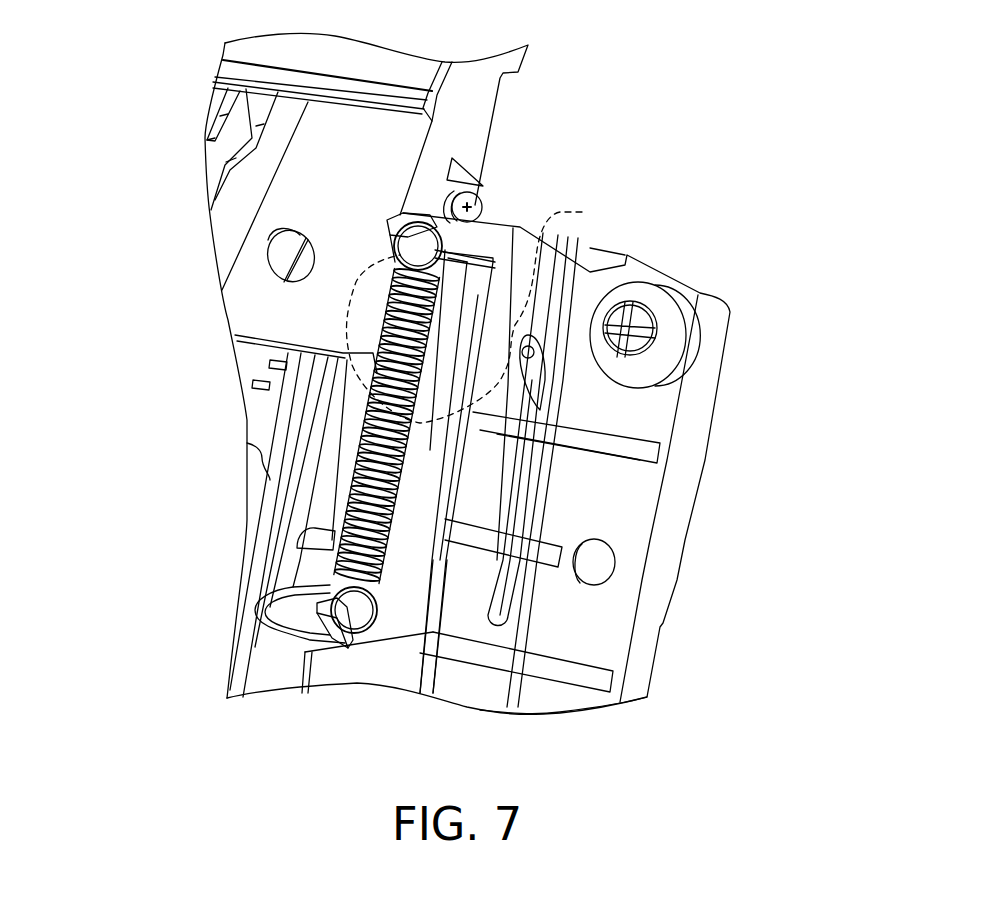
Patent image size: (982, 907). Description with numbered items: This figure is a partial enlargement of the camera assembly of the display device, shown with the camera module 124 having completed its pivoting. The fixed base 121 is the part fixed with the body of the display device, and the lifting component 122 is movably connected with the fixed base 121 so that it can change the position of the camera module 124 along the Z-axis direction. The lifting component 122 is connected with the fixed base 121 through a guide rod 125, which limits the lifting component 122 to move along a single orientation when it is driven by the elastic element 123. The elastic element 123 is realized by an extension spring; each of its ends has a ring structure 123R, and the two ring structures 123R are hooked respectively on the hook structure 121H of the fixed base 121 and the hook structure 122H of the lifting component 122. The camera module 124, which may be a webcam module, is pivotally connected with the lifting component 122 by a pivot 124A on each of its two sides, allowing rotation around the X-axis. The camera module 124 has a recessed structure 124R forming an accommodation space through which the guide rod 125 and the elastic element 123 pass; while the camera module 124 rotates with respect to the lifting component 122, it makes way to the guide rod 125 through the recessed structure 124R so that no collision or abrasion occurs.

The fixed base 121 is at (705, 340).
The hook structure 121H is at (397, 213).
The lifting component 122 is at (410, 597).
The hook structure 122H is at (330, 627).
The elastic element 123 is at (440, 448).
The ring structure 123R is at (388, 250).
The camera module 124 is at (473, 105).
The pivot 124A is at (480, 196).
The recessed structure 124R is at (494, 312).
The guide rod 125 is at (438, 365).